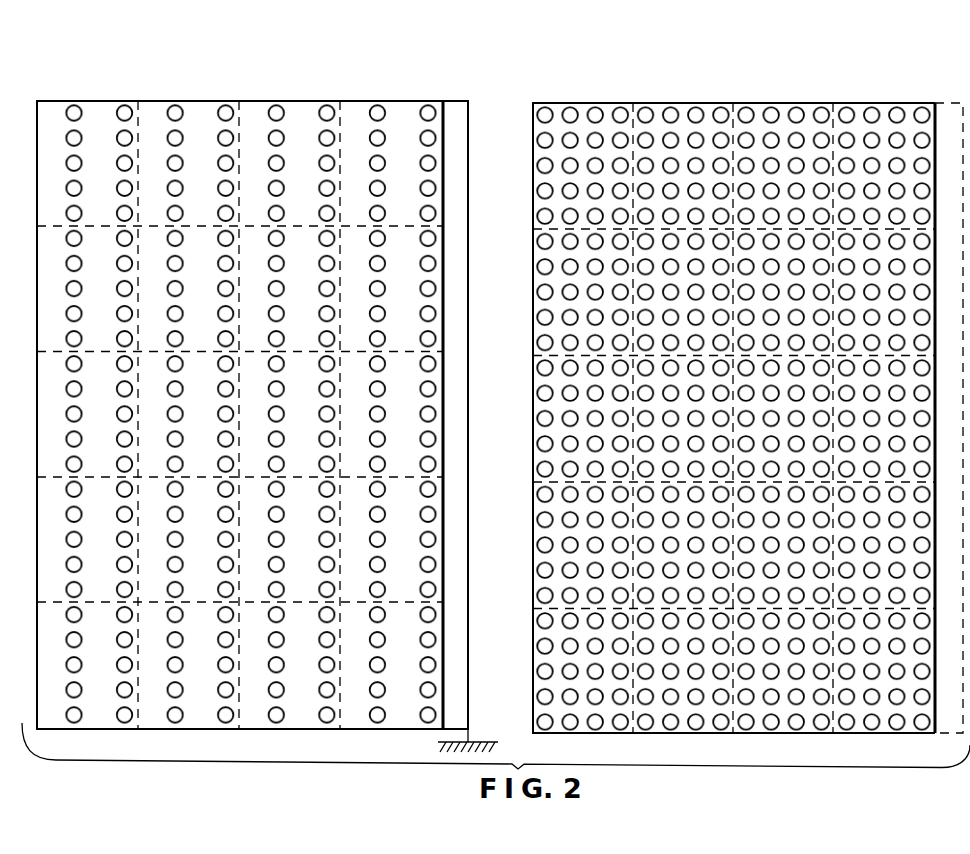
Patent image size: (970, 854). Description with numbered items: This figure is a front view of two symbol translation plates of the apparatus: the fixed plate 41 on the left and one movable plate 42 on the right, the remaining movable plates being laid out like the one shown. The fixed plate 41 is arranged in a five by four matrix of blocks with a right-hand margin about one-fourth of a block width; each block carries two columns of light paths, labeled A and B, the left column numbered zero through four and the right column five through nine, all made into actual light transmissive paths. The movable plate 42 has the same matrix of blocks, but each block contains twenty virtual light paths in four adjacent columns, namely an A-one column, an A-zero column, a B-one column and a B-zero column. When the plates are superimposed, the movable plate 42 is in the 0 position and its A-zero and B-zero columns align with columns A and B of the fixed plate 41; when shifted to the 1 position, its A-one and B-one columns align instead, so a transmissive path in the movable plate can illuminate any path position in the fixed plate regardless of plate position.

The fixed plate 41 is at (362, 103).
The movable plate 42 is at (734, 415).
The 1 position 1 is at (934, 752).
The 0 position 0 is at (950, 430).